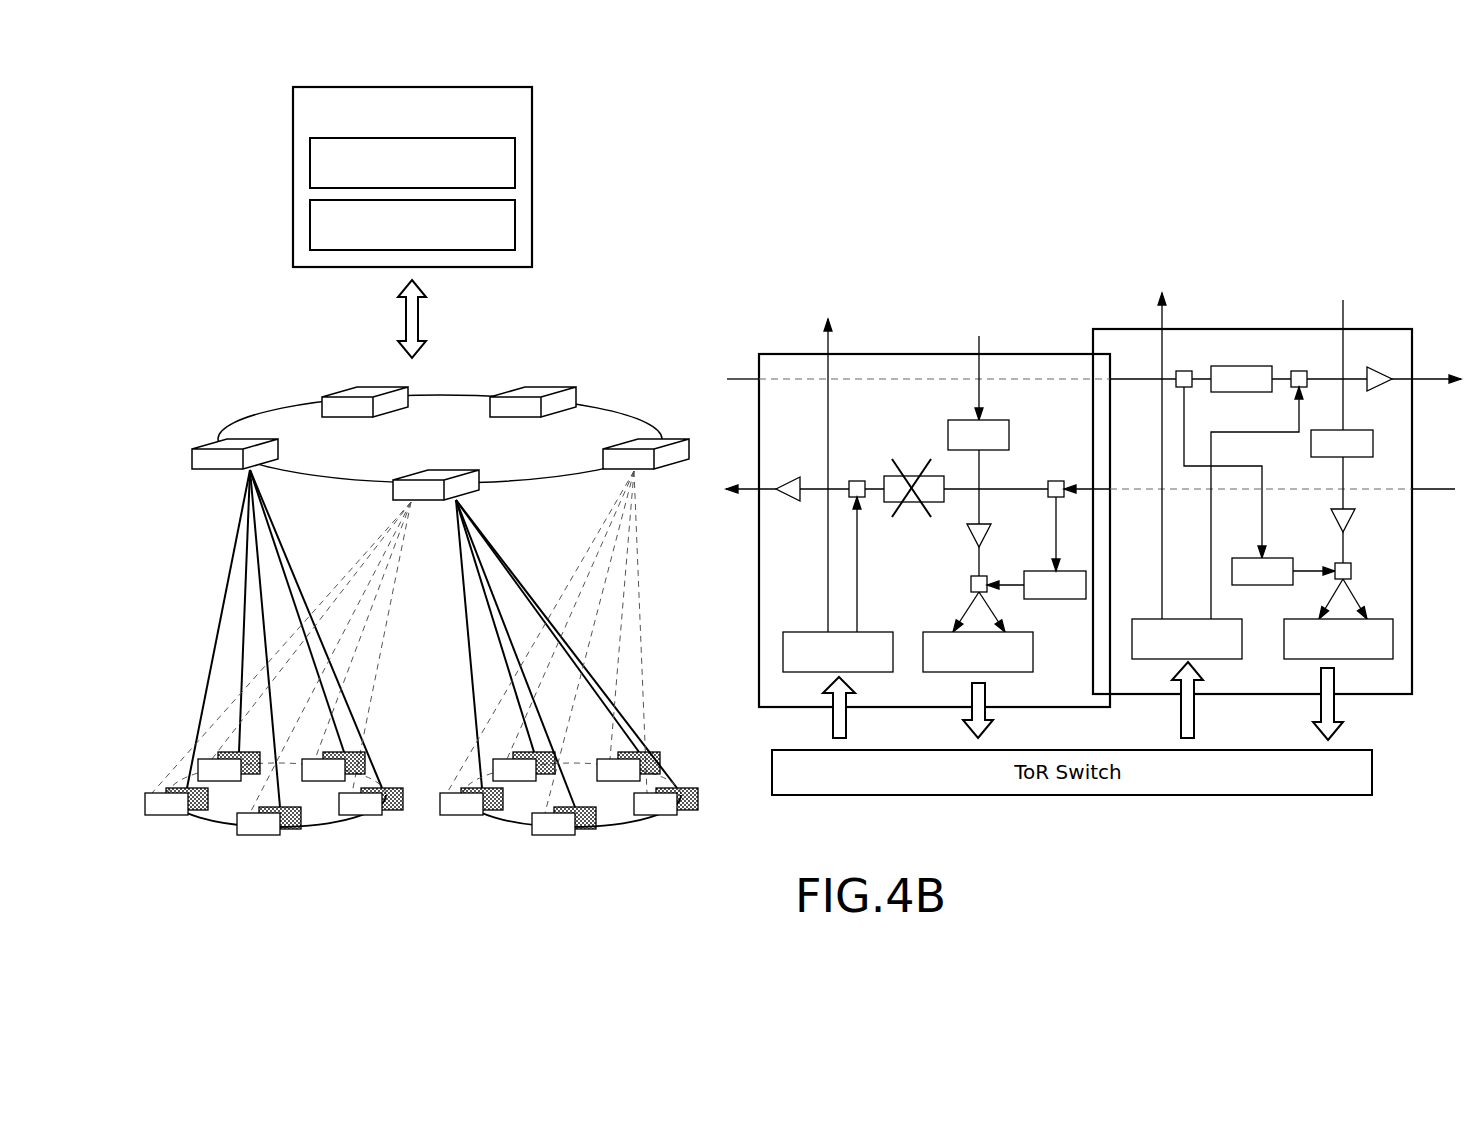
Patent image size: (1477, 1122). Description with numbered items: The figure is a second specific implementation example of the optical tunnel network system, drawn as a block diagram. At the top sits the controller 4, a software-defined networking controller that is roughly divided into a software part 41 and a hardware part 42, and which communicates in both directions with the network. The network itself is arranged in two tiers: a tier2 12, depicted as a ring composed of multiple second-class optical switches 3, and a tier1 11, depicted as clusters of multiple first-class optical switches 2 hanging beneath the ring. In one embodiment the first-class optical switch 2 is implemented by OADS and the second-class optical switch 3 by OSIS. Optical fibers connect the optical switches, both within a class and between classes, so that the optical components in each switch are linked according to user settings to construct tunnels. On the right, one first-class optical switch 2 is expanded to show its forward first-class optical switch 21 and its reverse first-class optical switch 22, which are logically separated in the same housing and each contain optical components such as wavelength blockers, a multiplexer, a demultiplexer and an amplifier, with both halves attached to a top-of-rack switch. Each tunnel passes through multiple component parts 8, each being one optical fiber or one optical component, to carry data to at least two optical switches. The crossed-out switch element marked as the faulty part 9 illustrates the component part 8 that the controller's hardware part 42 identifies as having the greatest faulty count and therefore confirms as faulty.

The controller 4 is at (522, 108).
The software part 41 is at (507, 159).
The hardware part 42 is at (507, 222).
The tier2 12 is at (615, 382).
The second-class optical switch 3 is at (668, 456).
The tier1 11 is at (208, 849).
The first-class optical switch 2 is at (298, 841).
The reverse first-class optical switch 22 is at (923, 360).
The forward first-class optical switch 21 is at (1200, 338).
The faulty part 9 is at (903, 453).
The component part 8 is at (1024, 423).